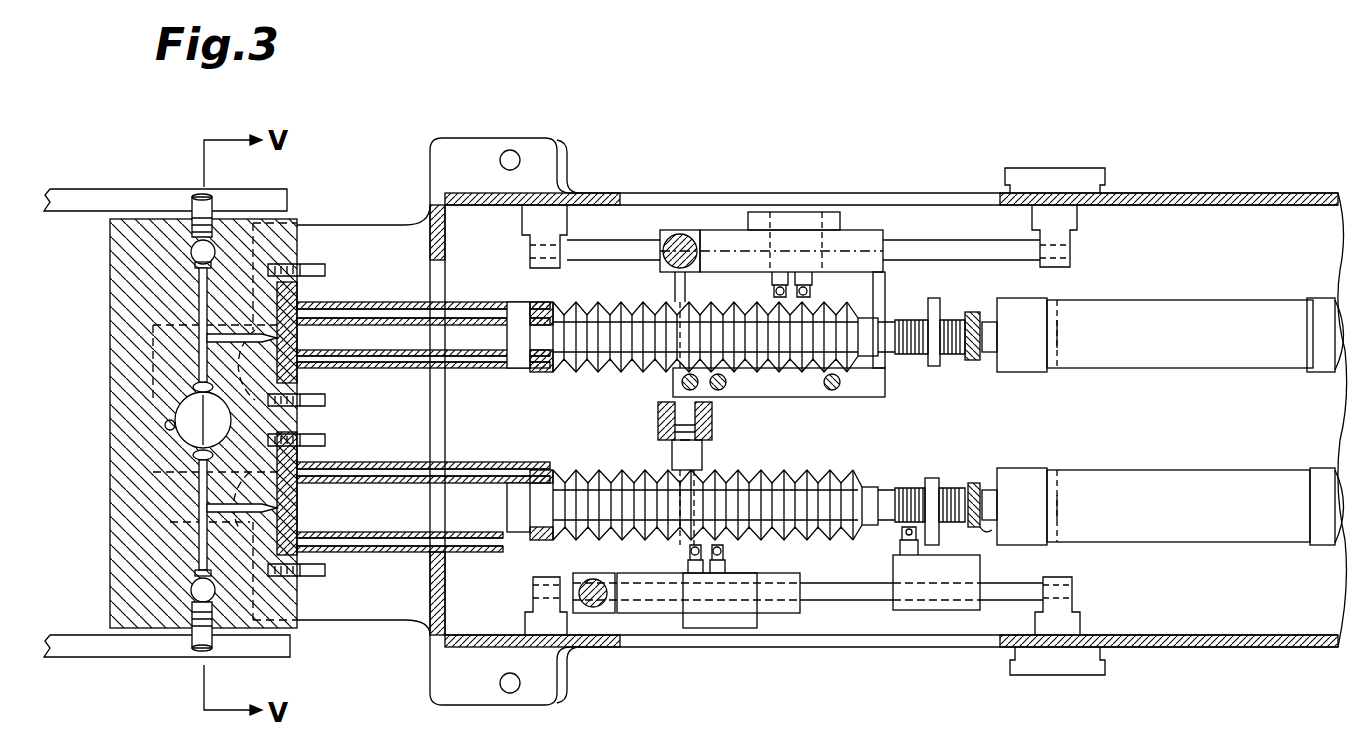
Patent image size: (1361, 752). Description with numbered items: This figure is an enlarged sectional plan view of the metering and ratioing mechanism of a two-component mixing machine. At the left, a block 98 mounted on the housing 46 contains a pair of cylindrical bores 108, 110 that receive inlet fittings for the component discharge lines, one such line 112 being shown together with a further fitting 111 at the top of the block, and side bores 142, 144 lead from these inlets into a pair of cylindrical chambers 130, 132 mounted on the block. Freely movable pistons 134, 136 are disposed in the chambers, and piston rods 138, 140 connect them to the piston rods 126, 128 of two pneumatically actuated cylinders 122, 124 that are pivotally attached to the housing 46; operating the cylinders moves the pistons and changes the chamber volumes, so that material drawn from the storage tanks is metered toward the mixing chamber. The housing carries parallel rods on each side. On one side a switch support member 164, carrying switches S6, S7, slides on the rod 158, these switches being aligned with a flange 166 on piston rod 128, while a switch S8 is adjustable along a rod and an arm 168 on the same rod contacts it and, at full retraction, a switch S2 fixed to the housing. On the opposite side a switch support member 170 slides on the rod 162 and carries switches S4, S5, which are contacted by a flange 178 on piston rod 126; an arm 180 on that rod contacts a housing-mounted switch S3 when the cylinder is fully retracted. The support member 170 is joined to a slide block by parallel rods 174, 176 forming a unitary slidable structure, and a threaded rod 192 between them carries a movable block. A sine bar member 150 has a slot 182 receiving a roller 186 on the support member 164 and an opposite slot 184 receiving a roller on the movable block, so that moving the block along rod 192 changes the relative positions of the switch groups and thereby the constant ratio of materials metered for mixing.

The housing 46 is at (1178, 192).
The block 98 is at (115, 446).
The cylindrical bore 108 is at (200, 312).
The cylindrical bore 110 is at (200, 552).
The upper pin 111 is at (210, 196).
The component discharge line 112 is at (212, 648).
The pneumatic cylinder 122 is at (1188, 300).
The pneumatic cylinder 124 is at (1187, 470).
The piston rod 126 is at (975, 312).
The piston rod 128 is at (986, 528).
The cylindrical chamber 130 is at (383, 330).
The cylindrical chamber 132 is at (397, 530).
The piston 134 is at (497, 332).
The piston 136 is at (503, 520).
The piston rod 138 is at (566, 370).
The piston rod 140 is at (592, 495).
The side bore 142 is at (262, 335).
The side bore 144 is at (262, 505).
The sine bar member 150 is at (658, 424).
The parallel rod 158 is at (858, 600).
The parallel rod 162 is at (985, 250).
The switch support member 164 is at (618, 615).
The flange 166 is at (932, 478).
The arm 168 is at (974, 483).
The switch support member 170 is at (883, 232).
The parallel rod 174 is at (836, 390).
The parallel rod 176 is at (682, 382).
The flange 178 is at (938, 282).
The arm 180 is at (978, 356).
The slot 182 is at (702, 452).
The slot 184 is at (672, 398).
The roller 186 is at (690, 440).
The rod 192 is at (722, 390).
The switch S2 is at (1060, 508).
The switch S3 is at (1060, 336).
The switch S4 is at (772, 290).
The switch S5 is at (812, 290).
The switch S6 is at (688, 555).
The switch S7 is at (725, 554).
The switch S8 is at (982, 570).